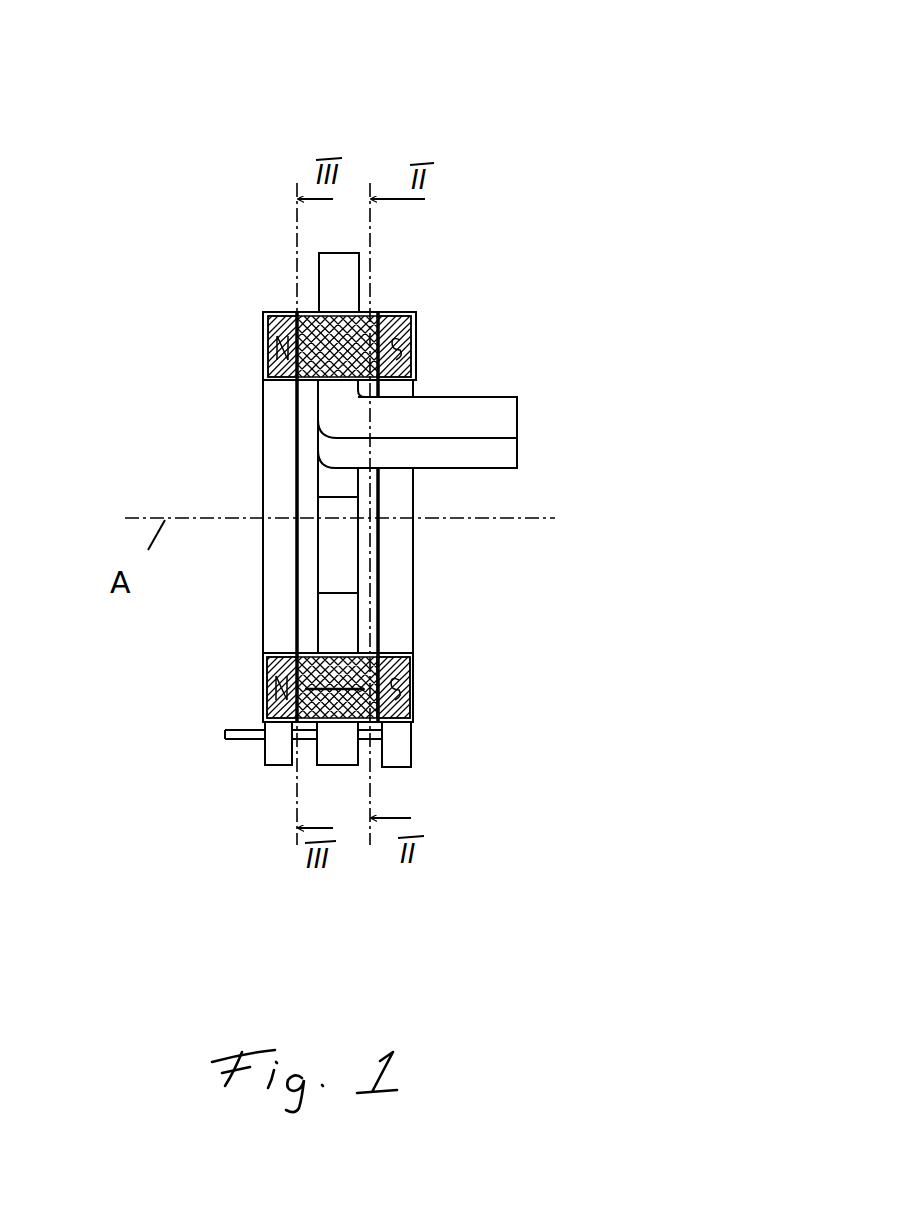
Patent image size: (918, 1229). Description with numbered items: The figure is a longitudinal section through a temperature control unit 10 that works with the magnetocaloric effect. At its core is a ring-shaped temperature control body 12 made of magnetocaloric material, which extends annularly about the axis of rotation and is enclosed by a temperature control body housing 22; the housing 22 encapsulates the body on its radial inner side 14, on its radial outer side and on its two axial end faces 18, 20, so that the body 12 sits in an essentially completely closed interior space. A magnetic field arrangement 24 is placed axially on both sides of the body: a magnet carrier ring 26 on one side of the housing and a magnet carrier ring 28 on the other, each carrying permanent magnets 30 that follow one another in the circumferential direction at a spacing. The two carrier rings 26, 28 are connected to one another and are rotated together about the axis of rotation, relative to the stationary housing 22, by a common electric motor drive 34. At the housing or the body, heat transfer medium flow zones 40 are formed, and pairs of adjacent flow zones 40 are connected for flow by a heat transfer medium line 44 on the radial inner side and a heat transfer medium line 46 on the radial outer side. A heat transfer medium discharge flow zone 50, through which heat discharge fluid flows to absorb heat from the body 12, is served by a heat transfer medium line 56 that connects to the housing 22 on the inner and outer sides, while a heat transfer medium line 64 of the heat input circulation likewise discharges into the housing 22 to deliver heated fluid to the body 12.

The temperature control unit 10 is at (496, 117).
The temperature control body 12 is at (355, 332).
The radial inner side 14 is at (362, 652).
The axial end face 18 is at (293, 665).
The axial end face 20 is at (380, 672).
The temperature control body housing 22 is at (310, 384).
The magnetic field arrangement 24 is at (237, 299).
The magnet carrier ring 26 is at (265, 693).
The magnet carrier ring 28 is at (413, 343).
The permanent magnet 30 is at (272, 363).
The electric motor drive 34 is at (284, 769).
The heat transfer medium flow zone 40 is at (311, 646).
The heat transfer medium line 44 is at (335, 603).
The heat transfer medium line 46 is at (342, 748).
The heat transfer medium discharge flow zone 50 is at (382, 276).
The heat transfer medium line 56 is at (507, 408).
The heat transfer medium line 64 is at (502, 457).